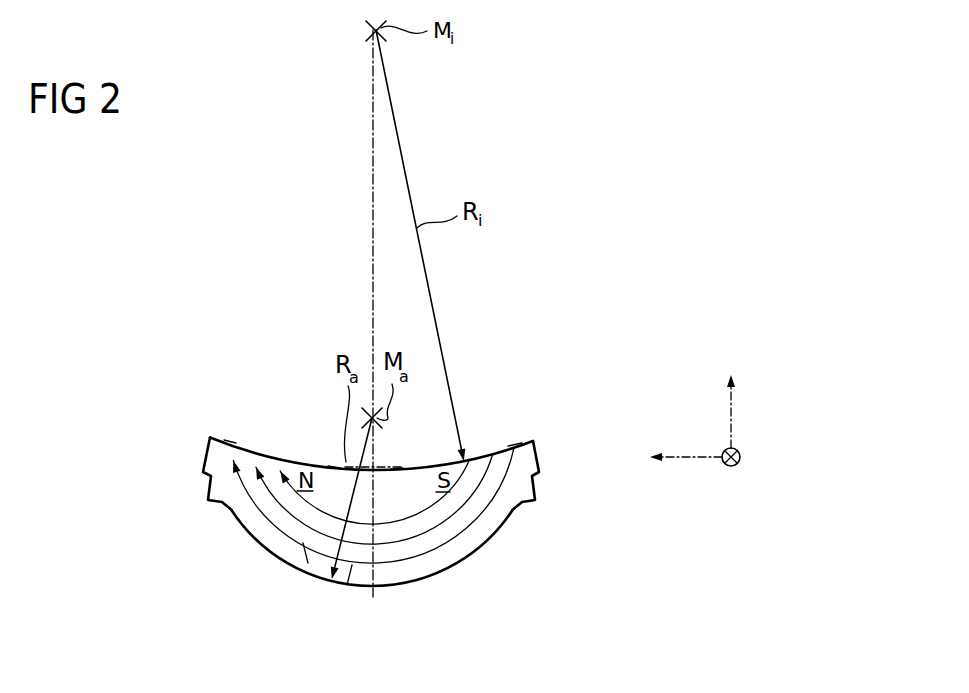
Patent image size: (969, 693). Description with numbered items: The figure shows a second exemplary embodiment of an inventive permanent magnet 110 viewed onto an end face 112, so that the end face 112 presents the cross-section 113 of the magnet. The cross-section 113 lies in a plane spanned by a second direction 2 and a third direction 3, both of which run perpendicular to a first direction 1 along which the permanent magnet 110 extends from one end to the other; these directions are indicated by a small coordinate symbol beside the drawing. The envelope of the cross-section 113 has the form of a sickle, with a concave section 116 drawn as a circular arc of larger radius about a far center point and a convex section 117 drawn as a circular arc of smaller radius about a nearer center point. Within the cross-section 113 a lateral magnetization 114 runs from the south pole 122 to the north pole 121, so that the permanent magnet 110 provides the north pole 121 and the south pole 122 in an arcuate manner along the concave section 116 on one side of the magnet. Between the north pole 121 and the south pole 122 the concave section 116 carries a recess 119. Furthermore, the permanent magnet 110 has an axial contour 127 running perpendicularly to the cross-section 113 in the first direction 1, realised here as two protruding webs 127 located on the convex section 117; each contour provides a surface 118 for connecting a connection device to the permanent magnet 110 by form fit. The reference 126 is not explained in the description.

The permanent magnet 110 is at (574, 262).
The end face 112 is at (221, 522).
The cross-section 113 is at (523, 522).
The magnetization 114 is at (291, 501).
The concave section 116 is at (334, 466).
The convex section 117 is at (474, 552).
The surface 118 is at (203, 474).
The recess 119 is at (397, 466).
The north pole 121 is at (230, 442).
The south pole 122 is at (518, 440).
The side step surfaces 126 is at (205, 502).
The axial contour 127 is at (187, 477).
The first direction 1 is at (740, 464).
The second direction 2 is at (690, 459).
The third direction 3 is at (733, 420).